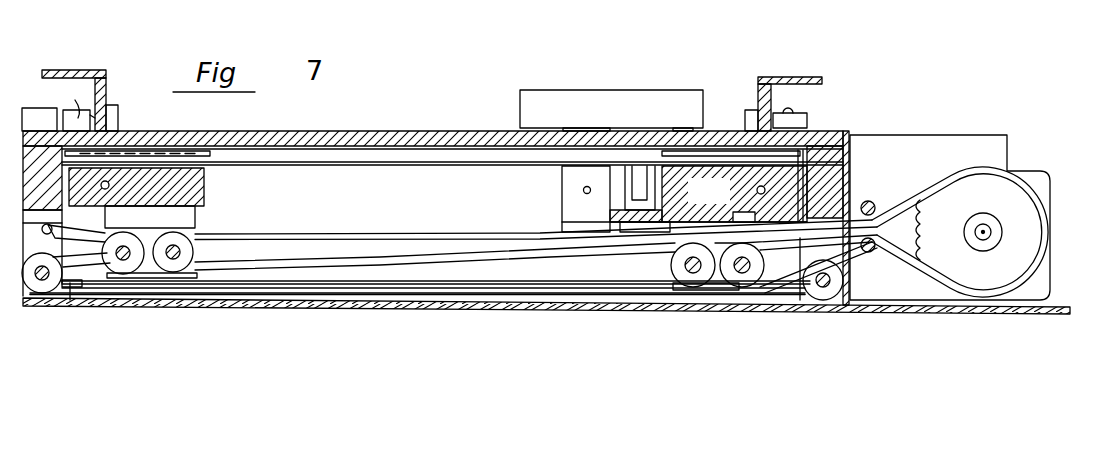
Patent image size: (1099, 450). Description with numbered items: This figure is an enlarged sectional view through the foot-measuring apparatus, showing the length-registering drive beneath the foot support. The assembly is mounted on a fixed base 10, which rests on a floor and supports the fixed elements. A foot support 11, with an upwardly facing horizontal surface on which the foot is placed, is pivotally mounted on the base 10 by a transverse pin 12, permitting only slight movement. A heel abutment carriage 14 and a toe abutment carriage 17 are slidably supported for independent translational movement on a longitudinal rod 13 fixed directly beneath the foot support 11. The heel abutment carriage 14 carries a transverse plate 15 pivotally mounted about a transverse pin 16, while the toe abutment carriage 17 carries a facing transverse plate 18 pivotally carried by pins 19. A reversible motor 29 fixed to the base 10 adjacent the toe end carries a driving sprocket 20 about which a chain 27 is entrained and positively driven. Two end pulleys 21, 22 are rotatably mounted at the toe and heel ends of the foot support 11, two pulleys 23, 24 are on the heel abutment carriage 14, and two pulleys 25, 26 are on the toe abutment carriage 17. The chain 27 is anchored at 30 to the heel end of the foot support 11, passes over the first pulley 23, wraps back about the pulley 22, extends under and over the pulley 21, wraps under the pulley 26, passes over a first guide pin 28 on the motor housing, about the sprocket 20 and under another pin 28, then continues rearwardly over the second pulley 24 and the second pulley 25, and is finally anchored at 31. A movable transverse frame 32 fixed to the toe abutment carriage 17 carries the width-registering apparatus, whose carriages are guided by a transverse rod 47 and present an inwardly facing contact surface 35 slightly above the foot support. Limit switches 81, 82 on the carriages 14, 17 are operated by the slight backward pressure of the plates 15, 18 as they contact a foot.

The fixed base 10 is at (364, 309).
The foot support 11 is at (370, 142).
The transverse pin 12 is at (822, 297).
The longitudinal rod 13 is at (435, 167).
The heel abutment carriage 14 is at (204, 191).
The transverse plate 15 is at (108, 95).
The transverse pin 16 is at (110, 186).
The toe abutment carriage 17 is at (740, 175).
The transverse plate 18 is at (758, 92).
The pins 19 is at (756, 190).
The driving sprocket 20 is at (1007, 202).
The end pulley 21 is at (840, 283).
The end pulley 22 is at (32, 295).
The pulley 23 is at (148, 230).
The pulley 24 is at (190, 242).
The pulley 25 is at (672, 267).
The pulley 26 is at (742, 285).
The chain 27 is at (270, 240).
The guide pin 28 is at (872, 203).
The reversible motor 29 is at (950, 217).
The anchor 30 is at (67, 245).
The anchor 31 is at (70, 300).
The transverse frame 32 is at (716, 294).
The contact surface 35 is at (652, 102).
The transverse rod 47 is at (583, 190).
The limit switch 81 is at (66, 110).
The limit switch 82 is at (812, 116).